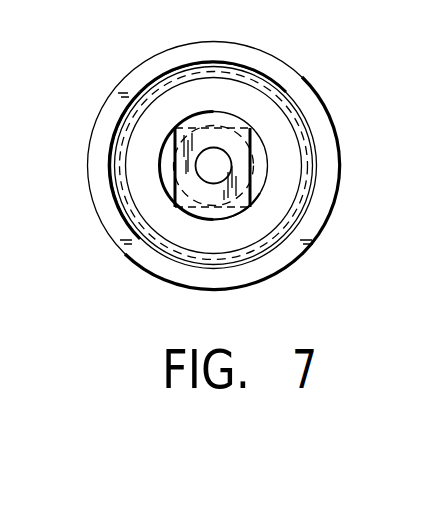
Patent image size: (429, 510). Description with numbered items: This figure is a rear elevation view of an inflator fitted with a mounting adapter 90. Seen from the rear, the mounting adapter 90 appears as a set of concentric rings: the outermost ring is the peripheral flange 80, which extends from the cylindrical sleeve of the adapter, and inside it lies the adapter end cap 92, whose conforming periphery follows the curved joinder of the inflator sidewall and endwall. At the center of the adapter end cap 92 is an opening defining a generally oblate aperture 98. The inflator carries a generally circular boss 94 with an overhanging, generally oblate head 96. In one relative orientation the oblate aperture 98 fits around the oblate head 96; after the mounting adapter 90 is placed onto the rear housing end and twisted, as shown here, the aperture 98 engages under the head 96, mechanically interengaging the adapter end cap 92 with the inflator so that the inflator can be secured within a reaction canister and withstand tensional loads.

The peripheral flange 80 is at (340, 150).
The mounting adapter 90 is at (323, 235).
The adapter end cap 92 is at (280, 245).
The boss 94 is at (177, 210).
The oblate head 96 is at (197, 114).
The oblate aperture 98 is at (268, 152).